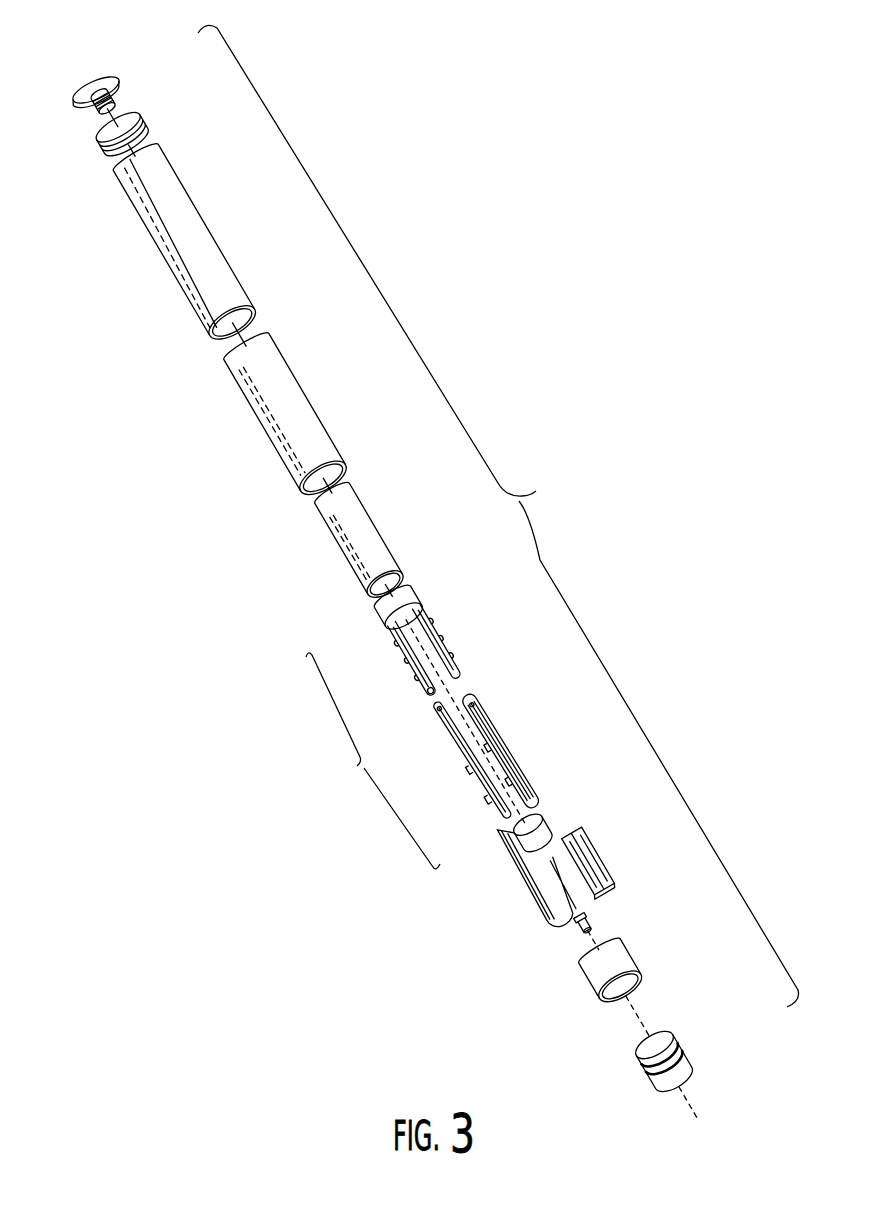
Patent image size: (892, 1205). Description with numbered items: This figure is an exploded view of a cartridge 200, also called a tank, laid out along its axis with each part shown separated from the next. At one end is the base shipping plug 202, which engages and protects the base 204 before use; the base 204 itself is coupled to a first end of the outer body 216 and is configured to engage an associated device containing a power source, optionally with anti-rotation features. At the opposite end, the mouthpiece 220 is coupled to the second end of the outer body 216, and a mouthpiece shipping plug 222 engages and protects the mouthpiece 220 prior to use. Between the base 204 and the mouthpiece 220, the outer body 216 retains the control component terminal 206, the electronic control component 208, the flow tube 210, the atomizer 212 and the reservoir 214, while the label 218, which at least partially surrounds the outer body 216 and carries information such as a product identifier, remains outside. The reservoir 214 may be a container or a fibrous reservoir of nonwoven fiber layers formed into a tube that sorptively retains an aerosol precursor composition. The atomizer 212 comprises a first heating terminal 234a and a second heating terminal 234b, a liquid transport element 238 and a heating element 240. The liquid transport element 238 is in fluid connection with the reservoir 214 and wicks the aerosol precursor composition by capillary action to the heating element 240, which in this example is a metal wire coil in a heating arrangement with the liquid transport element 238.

The cartridge 200 is at (498, 516).
The base shipping plug 202 is at (689, 1056).
The base 204 is at (592, 986).
The control component terminal 206 is at (588, 925).
The electronic control component 208 is at (597, 857).
The flow tube 210 is at (502, 859).
The atomizer 212 is at (373, 761).
The reservoir 214 is at (392, 550).
The outer body 216 is at (256, 418).
The label 218 is at (227, 260).
The mouthpiece 220 is at (150, 113).
The mouthpiece shipping plug 222 is at (122, 82).
The first heating terminal 234a is at (507, 757).
The second heating terminal 234b is at (478, 766).
The liquid transport element 238 is at (424, 693).
The heating element 240 is at (403, 647).